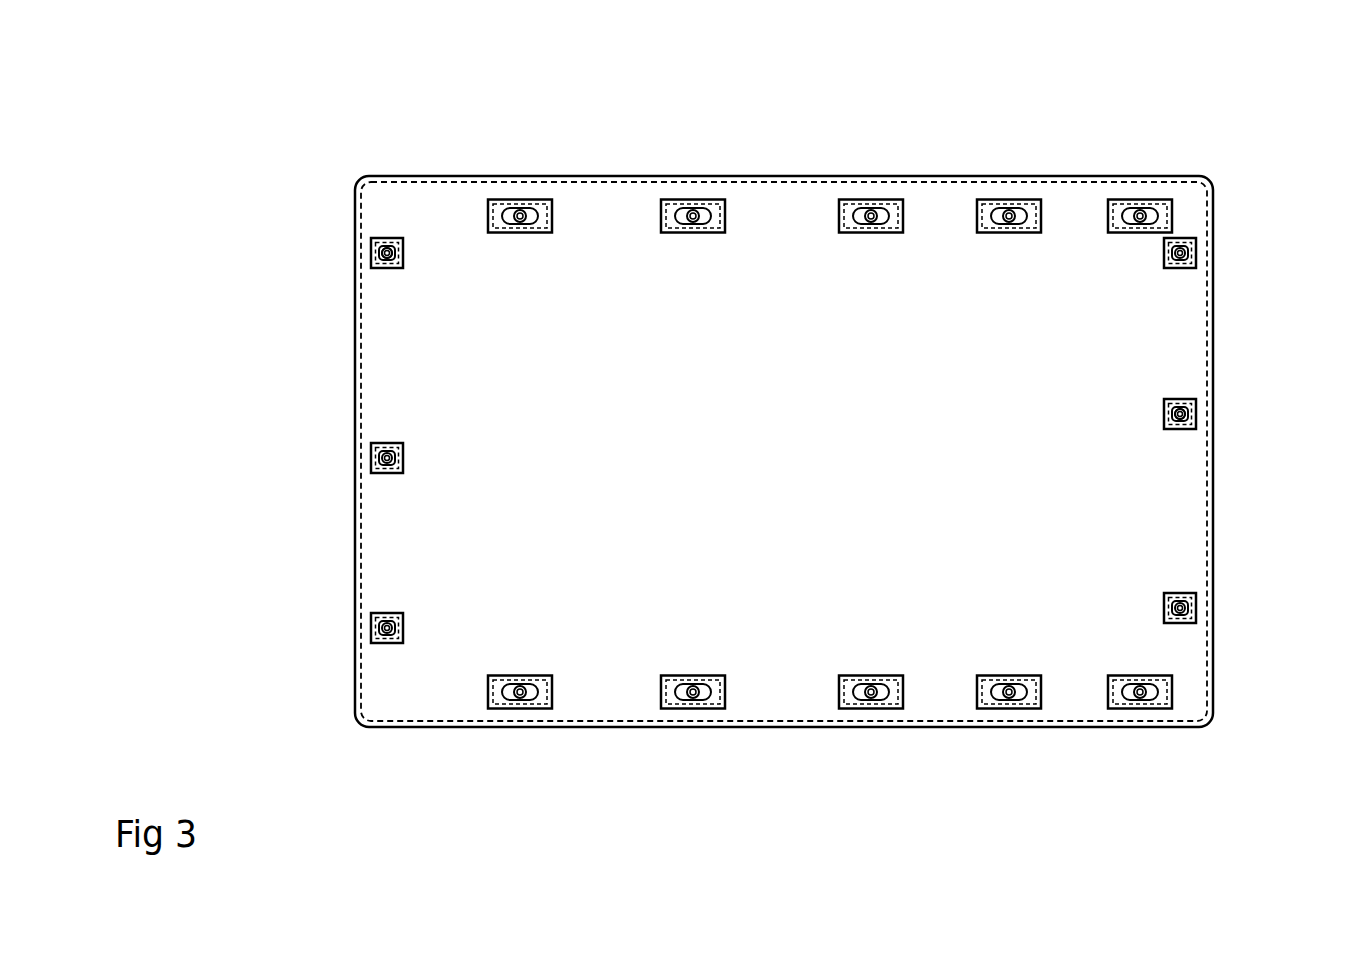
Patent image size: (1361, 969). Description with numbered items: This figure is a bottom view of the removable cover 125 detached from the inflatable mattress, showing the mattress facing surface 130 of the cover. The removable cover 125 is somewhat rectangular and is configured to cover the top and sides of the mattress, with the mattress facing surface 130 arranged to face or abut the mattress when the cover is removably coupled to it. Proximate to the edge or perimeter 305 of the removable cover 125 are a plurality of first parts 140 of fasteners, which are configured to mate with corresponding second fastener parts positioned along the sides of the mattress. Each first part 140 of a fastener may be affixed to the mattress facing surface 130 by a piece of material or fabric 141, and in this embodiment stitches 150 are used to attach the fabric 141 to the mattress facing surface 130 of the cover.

The removable cover 125 is at (390, 150).
The mattress facing surface 130 is at (1185, 555).
The first part of fastener 140 is at (378, 253).
The piece of material or fabric 141 is at (1197, 430).
The stitches 150 is at (402, 268).
The edge or perimeter 305 is at (438, 727).